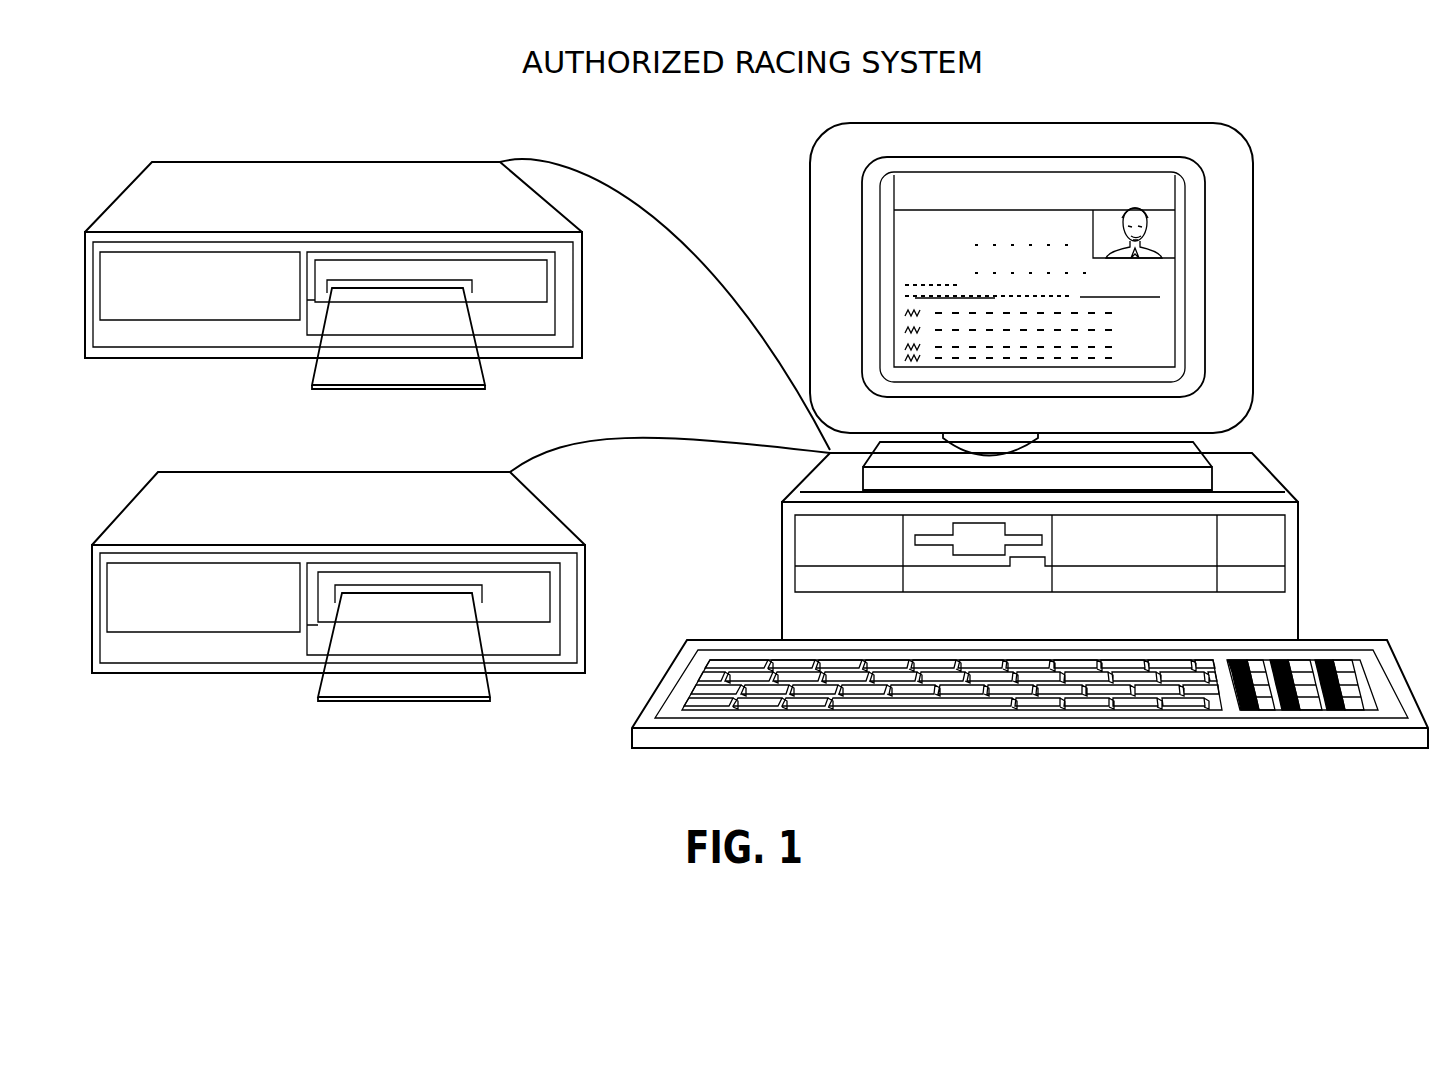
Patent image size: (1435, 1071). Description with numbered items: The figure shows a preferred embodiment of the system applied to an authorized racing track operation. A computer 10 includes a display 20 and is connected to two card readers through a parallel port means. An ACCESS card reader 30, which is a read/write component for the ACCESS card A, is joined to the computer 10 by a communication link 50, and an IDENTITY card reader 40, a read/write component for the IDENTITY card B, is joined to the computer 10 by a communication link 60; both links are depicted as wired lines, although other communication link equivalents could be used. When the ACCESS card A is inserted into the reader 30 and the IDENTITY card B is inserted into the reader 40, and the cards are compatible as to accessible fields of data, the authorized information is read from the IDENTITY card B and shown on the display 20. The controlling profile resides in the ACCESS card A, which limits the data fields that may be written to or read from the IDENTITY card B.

The computer 10 is at (1265, 470).
The display 20 is at (1253, 228).
The ACCESS card reader 30 is at (140, 500).
The IDENTITY card reader 40 is at (210, 162).
The communication link/line 50 is at (605, 437).
The communication link/line 60 is at (637, 202).
The ACCESS card A is at (483, 683).
The IDENTITY card B is at (485, 380).